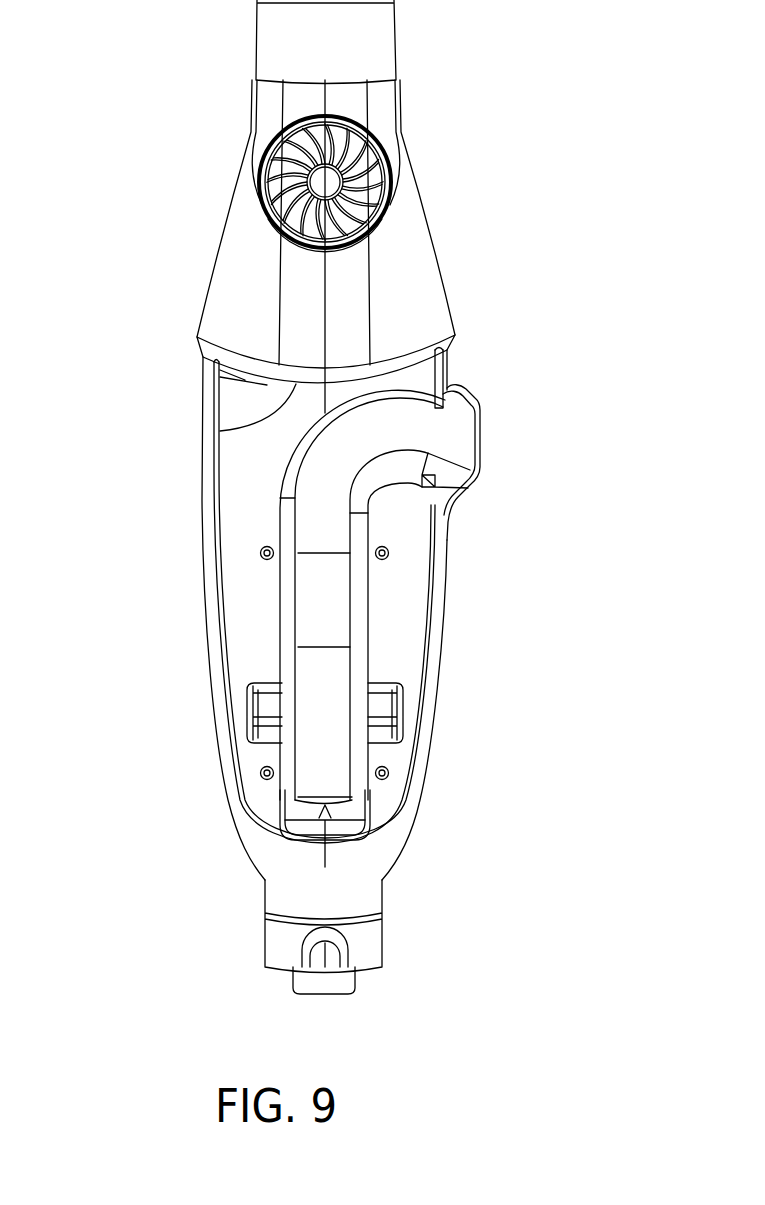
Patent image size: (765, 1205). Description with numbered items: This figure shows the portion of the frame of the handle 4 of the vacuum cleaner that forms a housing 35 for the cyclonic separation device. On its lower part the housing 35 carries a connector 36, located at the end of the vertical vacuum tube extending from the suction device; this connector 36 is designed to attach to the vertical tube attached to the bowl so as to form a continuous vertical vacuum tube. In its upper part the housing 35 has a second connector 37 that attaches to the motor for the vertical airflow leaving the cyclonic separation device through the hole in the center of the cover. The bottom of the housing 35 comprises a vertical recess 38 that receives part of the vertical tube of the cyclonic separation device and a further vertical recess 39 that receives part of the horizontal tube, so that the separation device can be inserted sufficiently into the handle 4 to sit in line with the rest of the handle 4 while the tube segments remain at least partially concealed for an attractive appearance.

The handle 4 is at (396, 42).
The housing 35 is at (395, 652).
The connector 36 is at (338, 827).
The second connector 37 is at (220, 437).
The vertical recess 38 is at (323, 602).
The vertical recess 39 is at (448, 440).